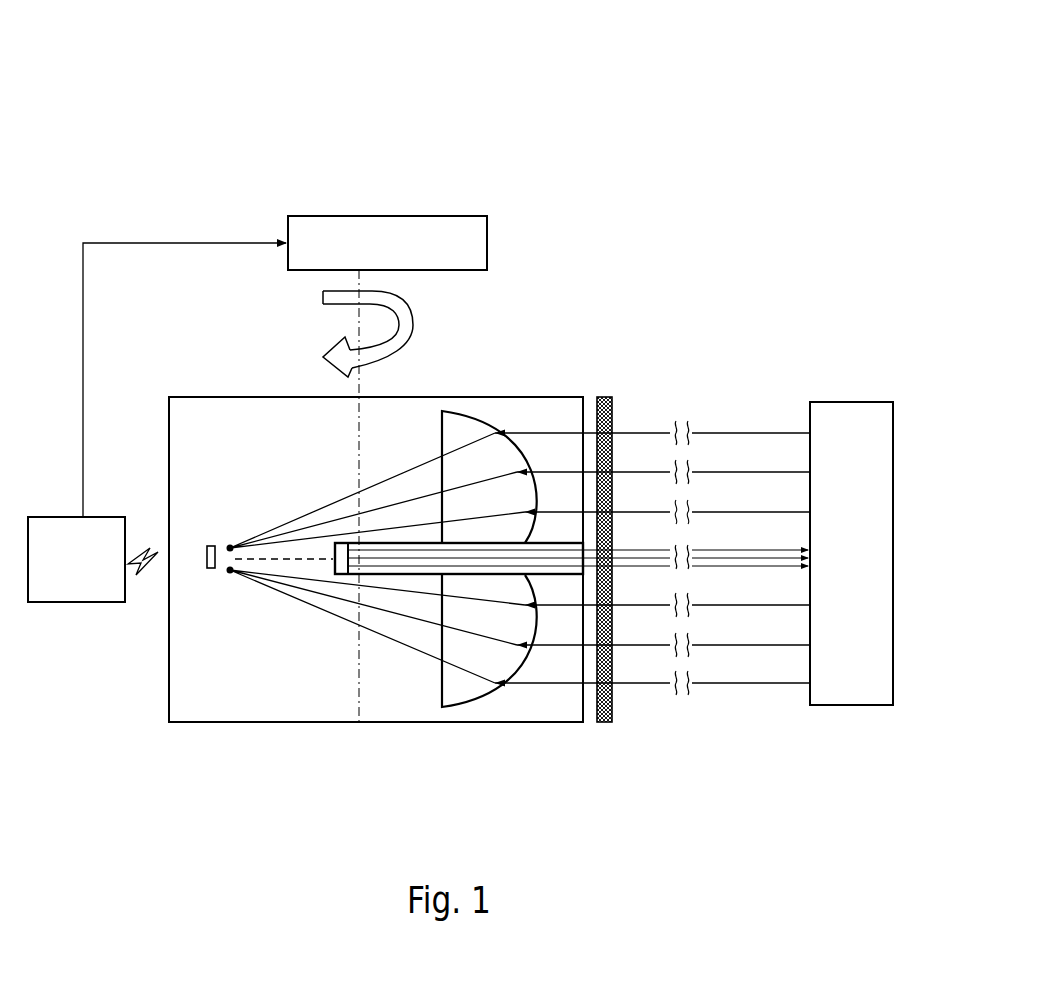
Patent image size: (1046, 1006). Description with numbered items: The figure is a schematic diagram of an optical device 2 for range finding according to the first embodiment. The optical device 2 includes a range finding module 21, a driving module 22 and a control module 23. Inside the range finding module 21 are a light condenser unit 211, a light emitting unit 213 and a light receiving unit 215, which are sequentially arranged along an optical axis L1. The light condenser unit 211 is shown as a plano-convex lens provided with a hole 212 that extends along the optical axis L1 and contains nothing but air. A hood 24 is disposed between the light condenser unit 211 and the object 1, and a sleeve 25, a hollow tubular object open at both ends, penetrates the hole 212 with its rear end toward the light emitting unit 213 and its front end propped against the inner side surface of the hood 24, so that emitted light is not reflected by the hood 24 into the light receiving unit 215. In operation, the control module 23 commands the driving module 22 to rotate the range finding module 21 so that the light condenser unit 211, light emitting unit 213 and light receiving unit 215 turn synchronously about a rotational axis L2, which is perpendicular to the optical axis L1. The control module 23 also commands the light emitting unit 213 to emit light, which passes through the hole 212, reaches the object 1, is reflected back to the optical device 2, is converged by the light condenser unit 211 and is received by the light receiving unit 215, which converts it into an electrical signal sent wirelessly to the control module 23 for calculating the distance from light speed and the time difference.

The object 1 is at (842, 402).
The optical device 2 is at (162, 47).
The range finding module 21 is at (212, 397).
The light condenser unit 211 is at (478, 425).
The hole 212 is at (480, 563).
The light emitting unit 213 is at (340, 543).
The light receiving unit 215 is at (215, 545).
The driving module 22 is at (413, 216).
The control module 23 is at (100, 517).
The hood 24 is at (604, 398).
The sleeve 25 is at (392, 575).
The optical axis L1 is at (407, 577).
The rotational axis L2 is at (337, 318).